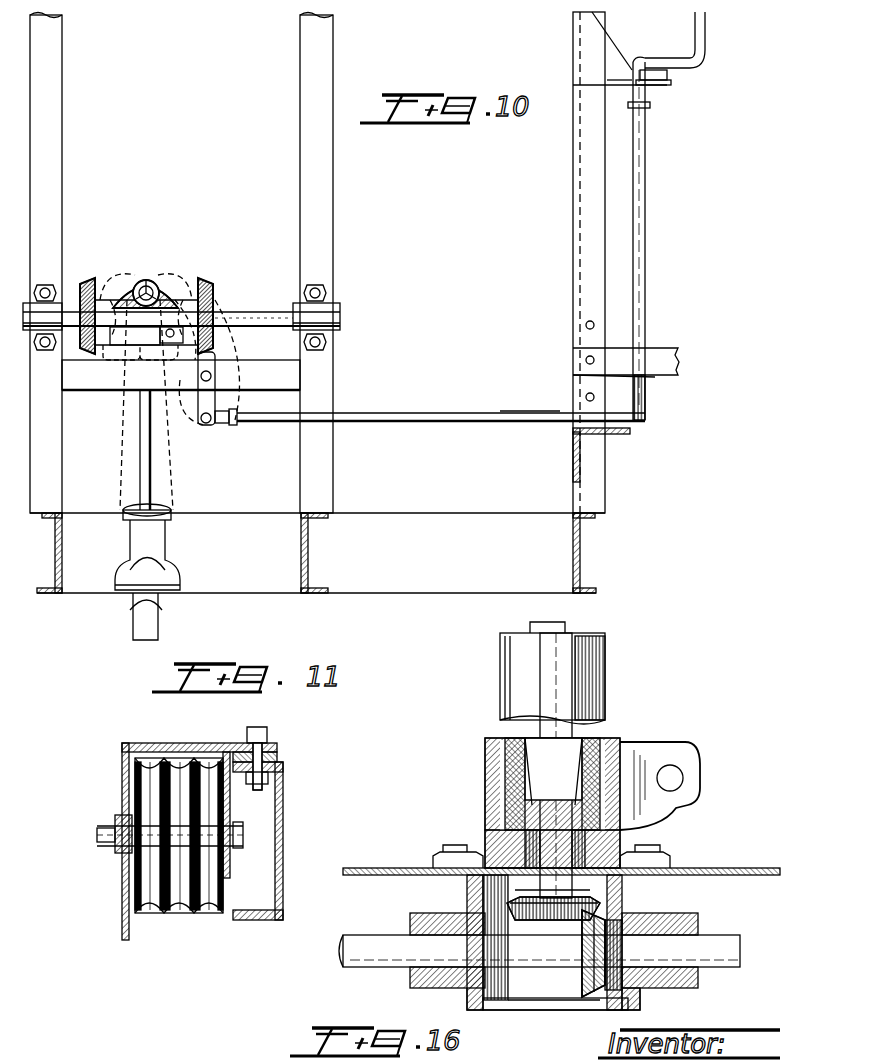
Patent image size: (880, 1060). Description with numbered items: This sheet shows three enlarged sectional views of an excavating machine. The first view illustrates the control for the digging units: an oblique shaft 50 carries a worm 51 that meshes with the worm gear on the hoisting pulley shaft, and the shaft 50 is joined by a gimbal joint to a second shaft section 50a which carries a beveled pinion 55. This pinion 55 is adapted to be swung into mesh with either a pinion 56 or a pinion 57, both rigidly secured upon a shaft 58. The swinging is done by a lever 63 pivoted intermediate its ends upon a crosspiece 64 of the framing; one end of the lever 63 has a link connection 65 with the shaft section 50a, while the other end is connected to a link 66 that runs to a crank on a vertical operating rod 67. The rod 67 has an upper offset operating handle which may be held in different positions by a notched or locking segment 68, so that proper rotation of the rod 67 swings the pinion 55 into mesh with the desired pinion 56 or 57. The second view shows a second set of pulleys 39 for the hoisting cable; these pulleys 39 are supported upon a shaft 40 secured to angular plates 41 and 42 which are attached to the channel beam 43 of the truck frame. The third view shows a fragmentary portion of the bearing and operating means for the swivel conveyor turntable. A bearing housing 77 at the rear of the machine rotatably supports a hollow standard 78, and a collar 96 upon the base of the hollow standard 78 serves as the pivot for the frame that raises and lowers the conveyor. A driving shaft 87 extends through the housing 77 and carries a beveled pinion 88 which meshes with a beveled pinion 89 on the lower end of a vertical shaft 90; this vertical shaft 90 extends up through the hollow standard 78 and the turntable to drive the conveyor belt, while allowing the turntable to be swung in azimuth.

In FIG. 11, the second set of pulleys 39 is at (213, 892).
In FIG. 11, the shaft 40 is at (243, 838).
In FIG. 11, the angular plate 41 is at (122, 752).
In FIG. 11, the angular plate 42 is at (230, 795).
In FIG. 11, the channel beam 43 is at (286, 790).
In FIG. 10, the oblique shaft 50 is at (148, 633).
In FIG. 10, the second shaft section 50a is at (125, 452).
In FIG. 10, the worm 51 is at (165, 538).
In FIG. 10, the beveled pinion 55 is at (147, 282).
In FIG. 10, the pinion 56 is at (213, 285).
In FIG. 10, the pinion 57 is at (85, 280).
In FIG. 10, the shaft 58 is at (255, 313).
In FIG. 10, the lever 63 is at (200, 425).
In FIG. 10, the crosspiece 64 is at (290, 372).
In FIG. 10, the link connection 65 is at (192, 300).
In FIG. 10, the link 66 is at (488, 400).
In FIG. 10, the vertical operating rod 67 is at (636, 280).
In FIG. 10, the notched or locking segment 68 is at (668, 78).
In FIG. 16, the bearing housing 77 is at (672, 866).
In FIG. 16, the hollow standard 78 is at (595, 668).
In FIG. 16, the driving shaft 87 is at (375, 935).
In FIG. 16, the beveled pinion 88 is at (590, 975).
In FIG. 16, the beveled pinion 89 is at (540, 923).
In FIG. 16, the vertical shaft 90 is at (560, 758).
In FIG. 16, the collar 96 is at (485, 755).